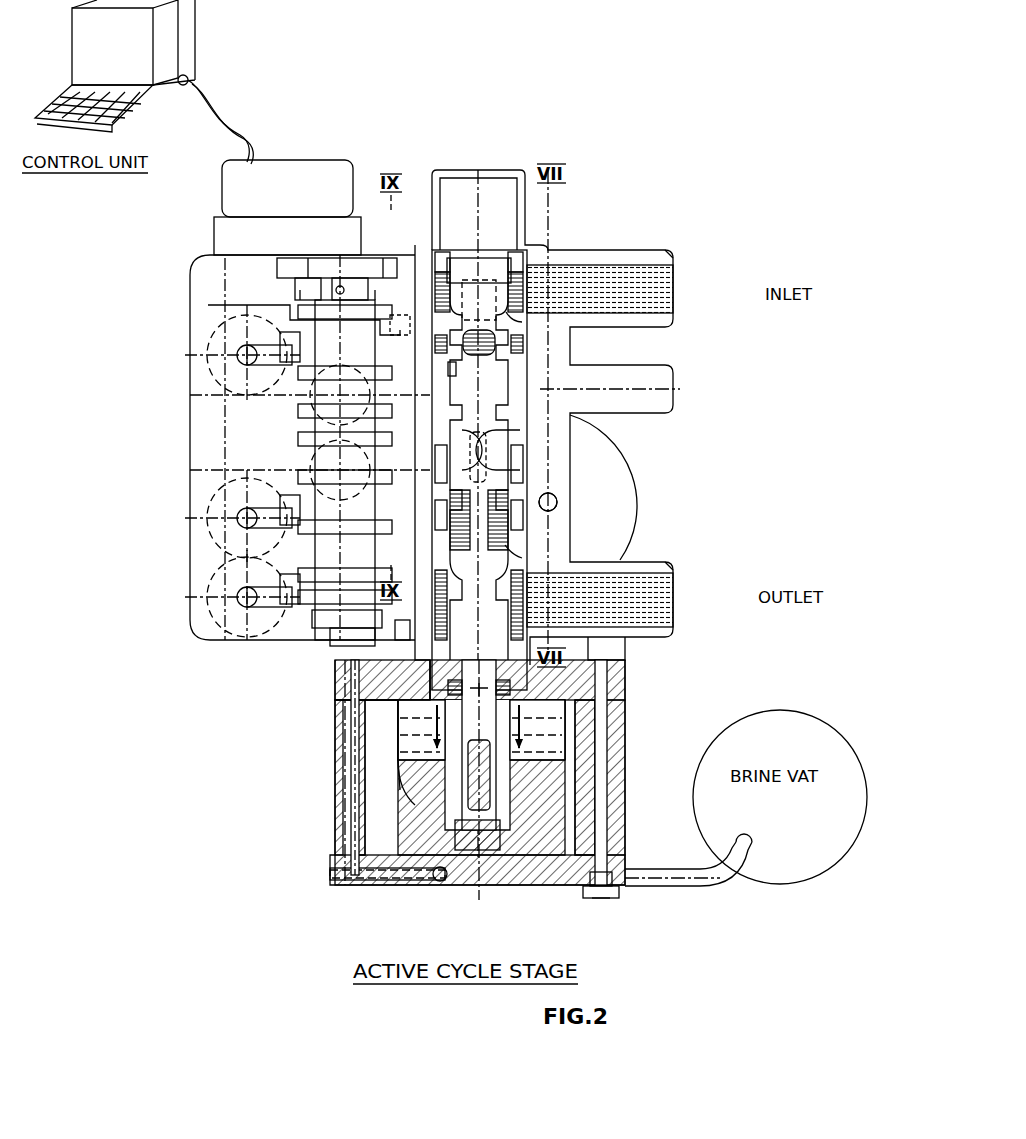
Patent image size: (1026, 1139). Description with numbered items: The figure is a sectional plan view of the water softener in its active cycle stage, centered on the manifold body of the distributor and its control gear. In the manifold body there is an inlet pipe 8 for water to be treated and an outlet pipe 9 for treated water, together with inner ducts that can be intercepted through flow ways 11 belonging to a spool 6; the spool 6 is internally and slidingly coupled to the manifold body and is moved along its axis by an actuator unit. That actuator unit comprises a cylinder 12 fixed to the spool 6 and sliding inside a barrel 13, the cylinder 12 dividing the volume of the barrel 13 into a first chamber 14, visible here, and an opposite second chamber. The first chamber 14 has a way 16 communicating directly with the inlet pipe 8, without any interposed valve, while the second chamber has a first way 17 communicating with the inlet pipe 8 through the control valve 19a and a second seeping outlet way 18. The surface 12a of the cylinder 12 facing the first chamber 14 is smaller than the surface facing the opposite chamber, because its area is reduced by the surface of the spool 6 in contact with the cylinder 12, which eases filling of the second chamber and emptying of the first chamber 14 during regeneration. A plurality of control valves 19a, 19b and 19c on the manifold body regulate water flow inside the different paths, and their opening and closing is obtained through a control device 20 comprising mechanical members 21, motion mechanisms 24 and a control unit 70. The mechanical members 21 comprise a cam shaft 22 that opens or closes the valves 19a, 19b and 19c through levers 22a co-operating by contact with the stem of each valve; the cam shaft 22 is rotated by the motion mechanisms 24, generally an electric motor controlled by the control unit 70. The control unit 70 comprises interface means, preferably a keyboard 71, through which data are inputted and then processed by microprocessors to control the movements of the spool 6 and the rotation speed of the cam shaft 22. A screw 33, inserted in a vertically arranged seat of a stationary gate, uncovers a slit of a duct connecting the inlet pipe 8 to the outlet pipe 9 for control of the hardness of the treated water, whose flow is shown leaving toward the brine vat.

The spool 6 is at (494, 262).
The inlet pipe 8 is at (682, 290).
The outlet pipe 9 is at (680, 600).
The flow ways 11 is at (506, 318).
The cylinder 12 is at (552, 777).
The surface of the cylinder facing the first chamber 12a is at (398, 750).
The barrel 13 is at (590, 726).
The first chamber 14 is at (481, 728).
The way 16 is at (345, 724).
The first way 17 is at (355, 690).
The second seeping outlet way 18 is at (606, 892).
The control valve 19a is at (213, 621).
The control valve 19b is at (208, 497).
The control valve 19c is at (223, 342).
The control device 20 is at (398, 150).
The mechanical members 21 is at (303, 332).
The cam shaft 22 is at (345, 335).
The levers 22a is at (252, 362).
The motion mechanisms 24 is at (300, 170).
The screw 33 is at (558, 500).
The control unit 70 is at (183, 47).
The keyboard 71 is at (65, 88).